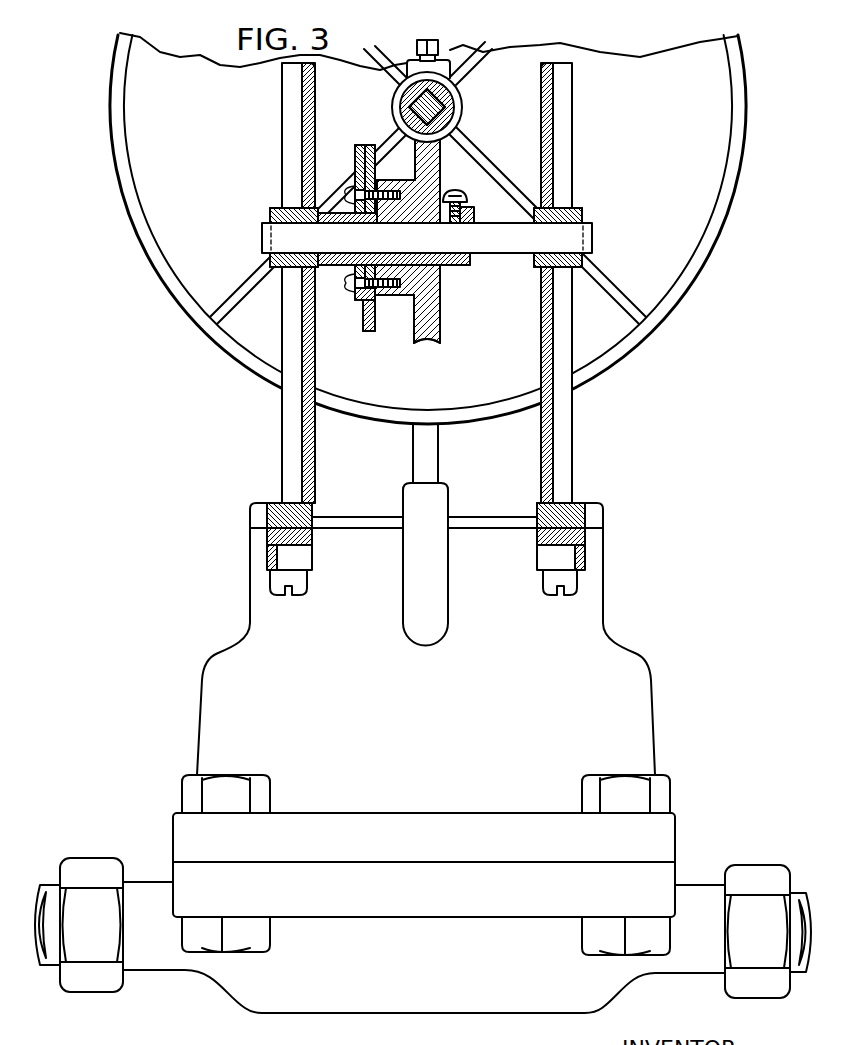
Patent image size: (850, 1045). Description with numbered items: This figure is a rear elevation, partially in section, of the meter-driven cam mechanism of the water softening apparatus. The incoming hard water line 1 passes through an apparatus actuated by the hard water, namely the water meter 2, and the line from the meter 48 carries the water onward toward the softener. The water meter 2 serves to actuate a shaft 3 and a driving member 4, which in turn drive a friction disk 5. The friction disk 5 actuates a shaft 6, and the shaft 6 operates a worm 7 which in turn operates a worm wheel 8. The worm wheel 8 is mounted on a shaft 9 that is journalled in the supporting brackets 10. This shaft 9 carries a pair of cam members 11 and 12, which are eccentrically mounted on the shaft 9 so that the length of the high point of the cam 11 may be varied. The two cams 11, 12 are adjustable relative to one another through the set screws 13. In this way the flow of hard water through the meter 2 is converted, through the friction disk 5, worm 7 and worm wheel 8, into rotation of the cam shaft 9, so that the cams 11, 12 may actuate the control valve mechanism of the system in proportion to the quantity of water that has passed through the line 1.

The incoming hard water line 1 is at (50, 884).
The water meter 2 is at (646, 658).
The shaft 3 is at (440, 457).
The driving member 4 is at (768, 910).
The line from the meter 48 is at (800, 892).
The friction disk 5 is at (733, 202).
The shaft 6 is at (403, 98).
The worm 7 is at (457, 100).
The worm wheel 8 is at (437, 163).
The shaft 9 is at (507, 250).
The supporting brackets 10 is at (281, 146).
The cam member 11 is at (366, 331).
The cam member 12 is at (360, 303).
The set screws 13 is at (355, 186).